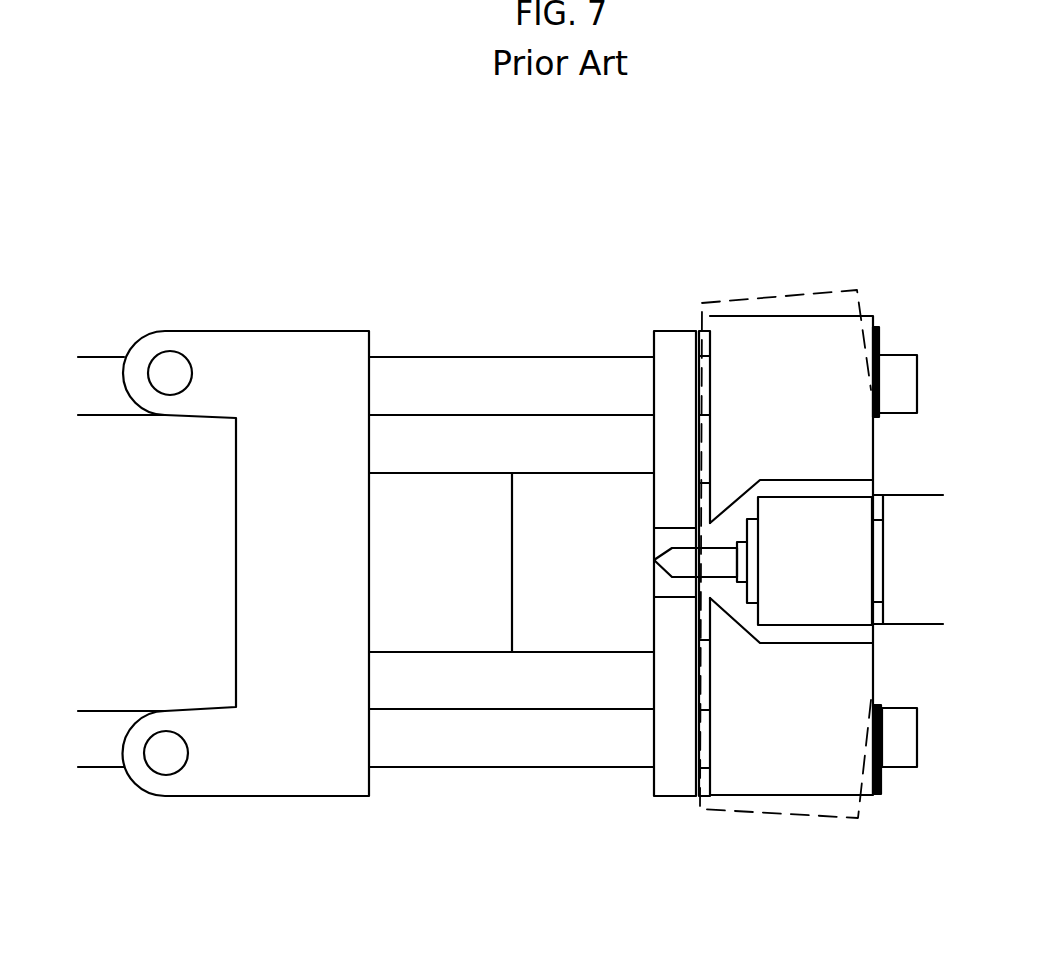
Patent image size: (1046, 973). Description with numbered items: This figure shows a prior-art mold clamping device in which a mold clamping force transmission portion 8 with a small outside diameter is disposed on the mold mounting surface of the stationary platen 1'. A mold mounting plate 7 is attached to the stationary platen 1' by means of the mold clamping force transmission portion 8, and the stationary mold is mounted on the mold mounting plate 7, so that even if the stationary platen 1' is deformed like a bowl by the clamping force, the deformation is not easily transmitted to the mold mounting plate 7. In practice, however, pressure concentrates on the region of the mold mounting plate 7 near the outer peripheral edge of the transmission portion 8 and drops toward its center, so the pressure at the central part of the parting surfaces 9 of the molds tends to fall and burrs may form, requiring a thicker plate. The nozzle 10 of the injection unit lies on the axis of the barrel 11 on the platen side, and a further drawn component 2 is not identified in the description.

The tie rod 2 is at (405, 388).
The parting surfaces 9 is at (512, 473).
The nozzle 10 is at (672, 548).
The barrel 11 is at (803, 493).
The mold mounting plate 7 is at (675, 775).
The mold clamping force transmission portion 8 is at (701, 612).
The stationary platen 1' is at (821, 624).